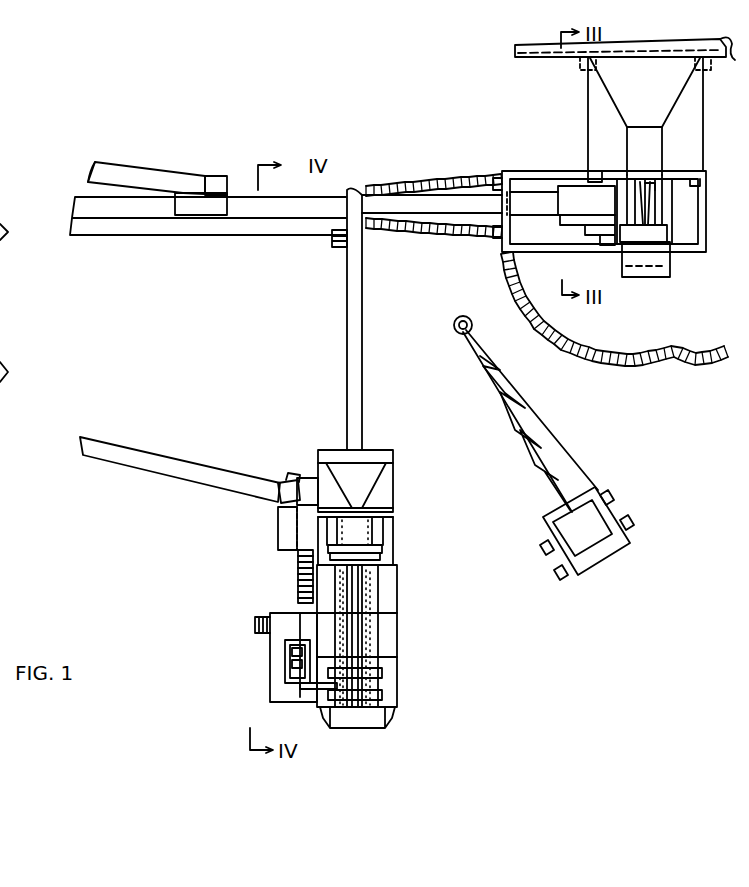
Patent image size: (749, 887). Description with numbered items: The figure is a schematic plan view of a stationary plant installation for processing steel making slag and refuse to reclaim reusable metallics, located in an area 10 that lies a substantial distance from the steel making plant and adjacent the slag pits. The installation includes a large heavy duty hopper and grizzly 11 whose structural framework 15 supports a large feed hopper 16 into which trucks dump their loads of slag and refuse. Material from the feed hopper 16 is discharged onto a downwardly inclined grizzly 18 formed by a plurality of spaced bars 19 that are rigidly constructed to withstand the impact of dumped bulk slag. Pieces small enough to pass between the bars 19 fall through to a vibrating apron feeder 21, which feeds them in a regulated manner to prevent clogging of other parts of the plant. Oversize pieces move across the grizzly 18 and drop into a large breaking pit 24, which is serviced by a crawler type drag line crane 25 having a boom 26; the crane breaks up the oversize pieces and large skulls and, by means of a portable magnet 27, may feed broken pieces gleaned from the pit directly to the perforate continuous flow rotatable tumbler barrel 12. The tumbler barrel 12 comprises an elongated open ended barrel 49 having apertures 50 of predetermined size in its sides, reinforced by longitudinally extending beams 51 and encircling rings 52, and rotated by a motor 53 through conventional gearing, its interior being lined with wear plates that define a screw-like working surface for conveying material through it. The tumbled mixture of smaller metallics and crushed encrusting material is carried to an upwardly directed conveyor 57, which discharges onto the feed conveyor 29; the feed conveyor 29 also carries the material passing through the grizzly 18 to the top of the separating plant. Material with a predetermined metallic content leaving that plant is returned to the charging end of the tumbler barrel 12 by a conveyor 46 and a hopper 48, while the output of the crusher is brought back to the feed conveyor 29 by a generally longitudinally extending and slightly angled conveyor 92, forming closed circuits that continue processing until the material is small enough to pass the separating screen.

The area 10 is at (84, 561).
The heavy duty hopper and grizzly 11 is at (547, 136).
The perforate continuous flow rotatable tumbler barrel 12 is at (470, 619).
The structural framework 15 is at (705, 171).
The feed hopper 16 is at (590, 100).
The grizzly 18 is at (650, 185).
The spaced bars 19 is at (655, 195).
The apron feeder 21 is at (567, 205).
The breaking pit 24 is at (662, 323).
The drag line crane 25 is at (608, 518).
The boom 26 is at (512, 396).
The portable magnet 27 is at (452, 324).
The feed conveyor 29 is at (159, 217).
The conveyor 46 is at (144, 460).
The hopper 48 is at (390, 472).
The barrel 49 is at (392, 590).
The apertures 50 is at (375, 640).
The longitudinally extending beams 51 is at (328, 598).
The encircling rings 52 is at (385, 547).
The motor 53 is at (285, 650).
The upwardly directed conveyor 57 is at (362, 392).
The conveyor 92 is at (165, 182).